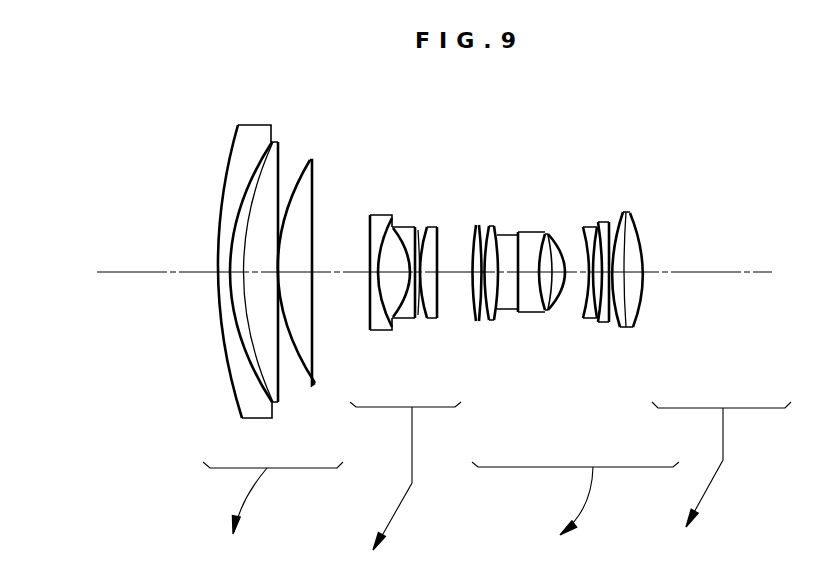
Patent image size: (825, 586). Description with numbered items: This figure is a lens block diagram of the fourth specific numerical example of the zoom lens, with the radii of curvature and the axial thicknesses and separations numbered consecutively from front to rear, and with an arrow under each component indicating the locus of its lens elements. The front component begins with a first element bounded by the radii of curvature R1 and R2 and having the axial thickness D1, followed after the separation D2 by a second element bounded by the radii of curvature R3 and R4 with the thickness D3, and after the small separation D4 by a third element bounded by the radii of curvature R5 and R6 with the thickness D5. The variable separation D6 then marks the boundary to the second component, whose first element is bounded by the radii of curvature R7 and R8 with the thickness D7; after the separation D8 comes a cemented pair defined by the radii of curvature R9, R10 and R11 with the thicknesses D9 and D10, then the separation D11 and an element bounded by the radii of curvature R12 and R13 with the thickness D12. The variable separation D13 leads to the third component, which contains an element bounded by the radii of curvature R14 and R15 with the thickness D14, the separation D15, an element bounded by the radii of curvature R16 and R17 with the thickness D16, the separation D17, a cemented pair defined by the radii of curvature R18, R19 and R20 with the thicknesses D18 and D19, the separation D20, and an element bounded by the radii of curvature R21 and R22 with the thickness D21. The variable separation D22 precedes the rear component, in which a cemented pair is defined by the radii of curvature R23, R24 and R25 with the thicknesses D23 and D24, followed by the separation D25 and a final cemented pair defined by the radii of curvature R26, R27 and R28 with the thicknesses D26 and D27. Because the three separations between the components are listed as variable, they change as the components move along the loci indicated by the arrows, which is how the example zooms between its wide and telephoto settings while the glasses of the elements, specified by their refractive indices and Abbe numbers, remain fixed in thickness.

The radius of curvature R1 is at (224, 176).
The radius of curvature R2 is at (240, 176).
The radius of curvature R3 is at (250, 182).
The radius of curvature R4 is at (275, 175).
The radius of curvature R5 is at (296, 170).
The radius of curvature R6 is at (318, 180).
The radius of curvature R7 is at (365, 237).
The radius of curvature R8 is at (383, 233).
The radius of curvature R9 is at (397, 243).
The radius of curvature R10 is at (410, 243).
The radius of curvature R11 is at (421, 250).
The radius of curvature R12 is at (428, 237).
The radius of curvature R13 is at (438, 243).
The radius of curvature R14 is at (467, 243).
The radius of curvature R15 is at (478, 222).
The radius of curvature R16 is at (492, 227).
The radius of curvature R17 is at (503, 228).
The radius of curvature R18 is at (522, 222).
The radius of curvature R19 is at (540, 228).
The radius of curvature R20 is at (557, 226).
The radius of curvature R21 is at (567, 230).
The radius of curvature R22 is at (581, 230).
The radius of curvature R23 is at (596, 224).
The radius of curvature R24 is at (604, 221).
The radius of curvature R25 is at (611, 220).
The radius of curvature R26 is at (623, 228).
The radius of curvature R27 is at (634, 242).
The radius of curvature R28 is at (645, 255).
The axial thickness D1 is at (233, 352).
The axial separation D2 is at (248, 345).
The axial thickness D3 is at (266, 345).
The axial separation D4 is at (285, 330).
The axial thickness D5 is at (305, 340).
The variable axial separation D6 is at (327, 276).
The axial thickness D7 is at (365, 332).
The axial separation D8 is at (380, 330).
The axial thickness D9 is at (395, 322).
The axial thickness D10 is at (406, 320).
The axial separation D11 is at (420, 323).
The axial thickness D12 is at (440, 320).
The variable axial separation D13 is at (461, 240).
The axial thickness D14 is at (477, 325).
The axial separation D15 is at (484, 325).
The axial thickness D16 is at (491, 325).
The axial separation D17 is at (500, 322).
The axial thickness D18 is at (513, 315).
The axial thickness D19 is at (532, 318).
The axial separation D20 is at (552, 316).
The axial thickness D21 is at (568, 318).
The variable axial separation D22 is at (576, 312).
The axial thickness D23 is at (590, 322).
The axial thickness D24 is at (598, 324).
The axial separation D25 is at (605, 325).
The axial thickness D26 is at (615, 328).
The axial thickness D27 is at (630, 330).